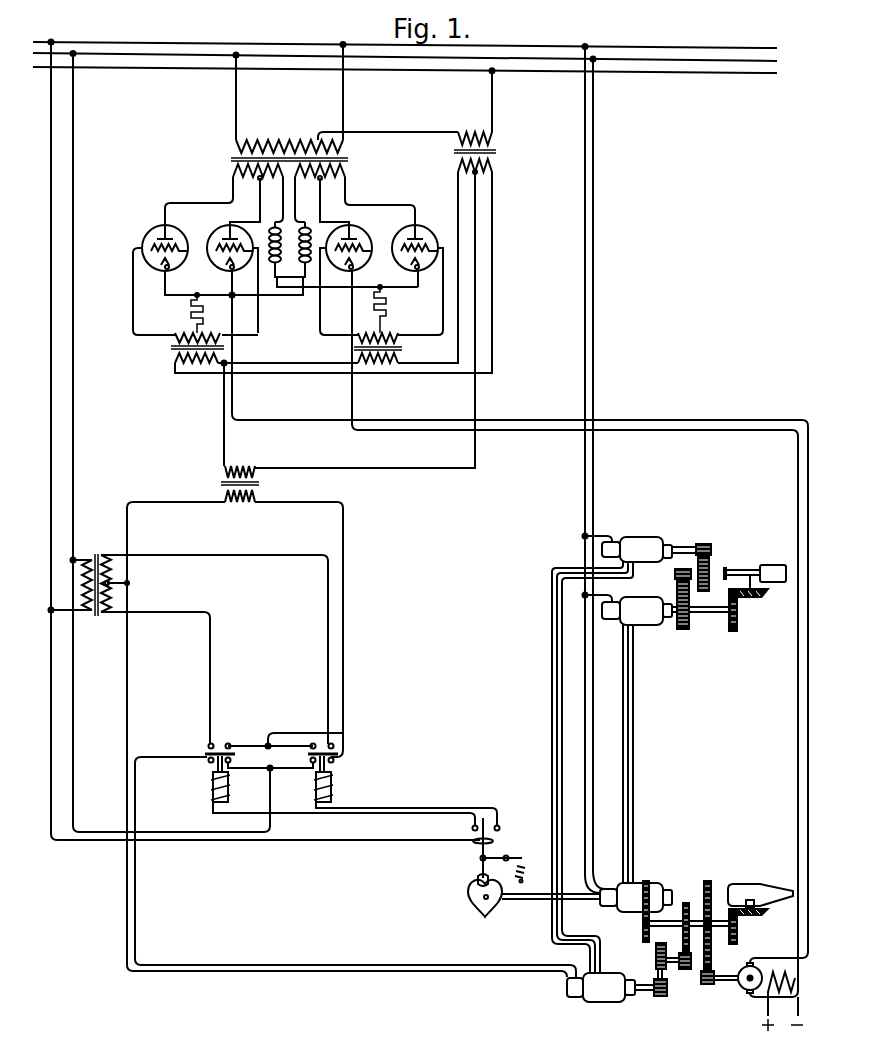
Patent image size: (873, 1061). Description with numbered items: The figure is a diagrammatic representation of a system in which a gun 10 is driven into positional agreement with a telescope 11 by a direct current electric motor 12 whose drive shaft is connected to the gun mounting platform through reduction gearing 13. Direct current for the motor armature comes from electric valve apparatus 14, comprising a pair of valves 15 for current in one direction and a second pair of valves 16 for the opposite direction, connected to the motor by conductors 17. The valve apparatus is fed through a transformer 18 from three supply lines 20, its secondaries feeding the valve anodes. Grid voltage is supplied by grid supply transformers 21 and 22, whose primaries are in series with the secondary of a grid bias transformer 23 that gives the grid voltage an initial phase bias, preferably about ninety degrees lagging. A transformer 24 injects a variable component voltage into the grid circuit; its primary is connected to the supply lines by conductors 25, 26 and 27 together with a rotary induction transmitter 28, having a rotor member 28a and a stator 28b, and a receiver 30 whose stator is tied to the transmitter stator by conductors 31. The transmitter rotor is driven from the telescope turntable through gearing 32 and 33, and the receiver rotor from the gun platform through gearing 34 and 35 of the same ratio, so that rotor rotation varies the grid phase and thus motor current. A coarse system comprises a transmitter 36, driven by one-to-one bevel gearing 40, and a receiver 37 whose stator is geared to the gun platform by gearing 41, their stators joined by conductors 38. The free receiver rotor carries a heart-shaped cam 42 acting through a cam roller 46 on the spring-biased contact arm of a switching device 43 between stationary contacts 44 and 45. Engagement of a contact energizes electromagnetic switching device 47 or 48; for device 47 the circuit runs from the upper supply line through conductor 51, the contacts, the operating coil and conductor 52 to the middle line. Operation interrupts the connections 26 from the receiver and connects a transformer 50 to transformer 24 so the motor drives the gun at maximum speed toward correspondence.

The gun 10 is at (742, 887).
The telescope 11 is at (742, 569).
The direct current electric motor 12 is at (742, 992).
The reduction gearing 13 is at (714, 968).
The electric valve apparatus 14 is at (395, 192).
The pair of valves 15 is at (212, 239).
The second pair of valves 16 is at (397, 239).
The conductors 17 is at (670, 420).
The transformer 18 is at (231, 160).
The supply lines 20 is at (188, 67).
The grid supply transformer 21 is at (171, 348).
The grid supply transformer 22 is at (402, 351).
The grid bias transformer 23 is at (496, 153).
The transformer 24 is at (221, 484).
The conductors 25 is at (128, 525).
The conductors 26 is at (268, 962).
The conductors 27 is at (594, 294).
The rotary induction device 28 is at (690, 518).
The rotor member 28a is at (668, 548).
The stator 28b is at (642, 567).
The rotary induction device 30 is at (612, 1020).
The conductors 31 is at (552, 695).
The gearing 32 is at (712, 568).
The gearing 33 is at (690, 600).
The gearing 34 is at (654, 980).
The gearing 35 is at (684, 971).
The transmitter 36 is at (648, 625).
The receiver 37 is at (653, 885).
The conductors 38 is at (634, 704).
The bevel gearing 40 is at (742, 609).
The gearing 41 is at (645, 906).
The heart-shaped cam 42 is at (498, 908).
The switching device 43 is at (495, 851).
The stationary contact 44 is at (471, 829).
The stationary contact 45 is at (501, 829).
The cam roller 46 is at (477, 879).
The electromagnetic switching device 47 is at (210, 786).
The electromagnetic switching device 48 is at (330, 786).
The transformer 50 is at (97, 554).
The conductor 51 is at (51, 687).
The conductor 52 is at (73, 747).